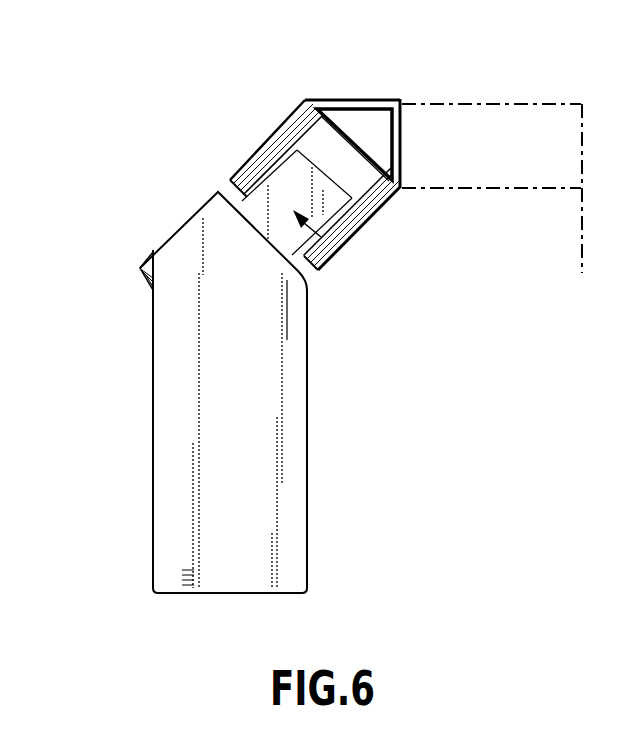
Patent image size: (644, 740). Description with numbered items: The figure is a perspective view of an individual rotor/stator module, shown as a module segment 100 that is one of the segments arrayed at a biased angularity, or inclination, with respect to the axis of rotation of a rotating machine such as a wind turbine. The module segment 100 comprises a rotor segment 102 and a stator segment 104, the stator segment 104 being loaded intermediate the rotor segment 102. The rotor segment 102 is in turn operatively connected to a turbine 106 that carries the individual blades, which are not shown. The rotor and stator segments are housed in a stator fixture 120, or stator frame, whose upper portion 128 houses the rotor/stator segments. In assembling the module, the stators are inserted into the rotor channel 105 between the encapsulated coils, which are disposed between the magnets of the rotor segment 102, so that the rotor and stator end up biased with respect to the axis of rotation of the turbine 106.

The module segment 100 is at (291, 104).
The rotor segment 102 is at (242, 163).
The stator segment 104 is at (363, 220).
The rotor channel 105 is at (313, 137).
The turbine 106 is at (560, 190).
The stator fixture 120 is at (153, 463).
The upper portion 128 is at (138, 268).